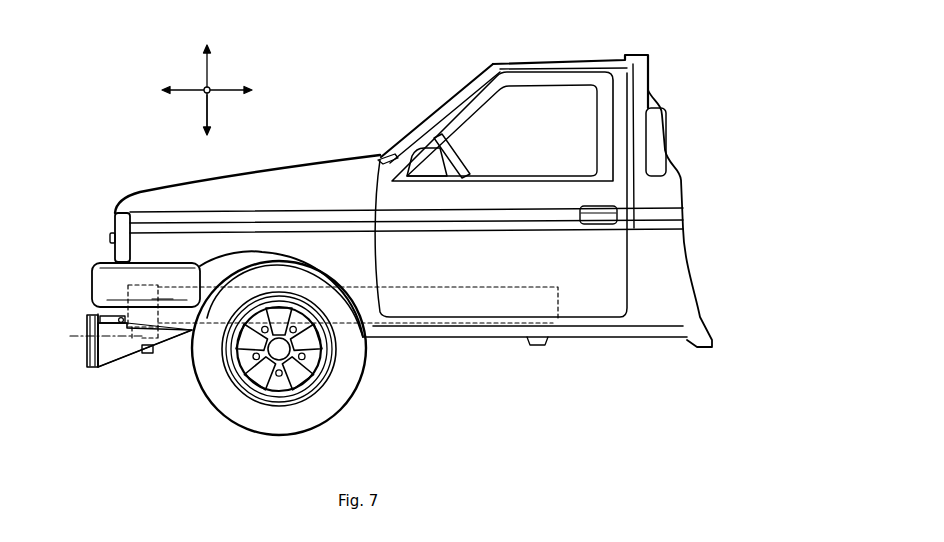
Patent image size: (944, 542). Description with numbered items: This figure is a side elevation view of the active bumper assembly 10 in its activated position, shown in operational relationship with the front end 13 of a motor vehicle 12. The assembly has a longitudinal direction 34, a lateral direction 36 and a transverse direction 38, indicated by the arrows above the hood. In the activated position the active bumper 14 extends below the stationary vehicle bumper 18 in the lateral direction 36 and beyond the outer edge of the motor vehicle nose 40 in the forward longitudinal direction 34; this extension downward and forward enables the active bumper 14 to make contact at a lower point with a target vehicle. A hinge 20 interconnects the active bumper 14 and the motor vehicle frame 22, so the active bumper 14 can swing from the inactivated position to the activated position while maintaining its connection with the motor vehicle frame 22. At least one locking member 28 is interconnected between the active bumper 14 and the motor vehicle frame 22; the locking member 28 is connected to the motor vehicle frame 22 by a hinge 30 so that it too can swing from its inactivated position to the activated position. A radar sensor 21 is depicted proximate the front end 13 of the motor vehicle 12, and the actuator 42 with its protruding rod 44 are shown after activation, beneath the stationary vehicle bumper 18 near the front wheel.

The active bumper assembly 10 is at (148, 373).
The motor vehicle 12 is at (399, 111).
The front end 13 is at (104, 203).
The active bumper 14 is at (82, 368).
The stationary vehicle bumper 18 is at (108, 238).
The hinge 20 is at (100, 318).
The radar sensor 21 is at (112, 222).
The motor vehicle frame 22 is at (343, 325).
The locking member 28 is at (120, 352).
The hinge 30 is at (96, 338).
The longitudinal direction 34 is at (230, 89).
The lateral direction 36 is at (207, 115).
The transverse direction 38 is at (209, 87).
The motor vehicle nose 40 is at (102, 274).
The actuator 42 is at (160, 293).
The protruding rod 44 is at (145, 357).